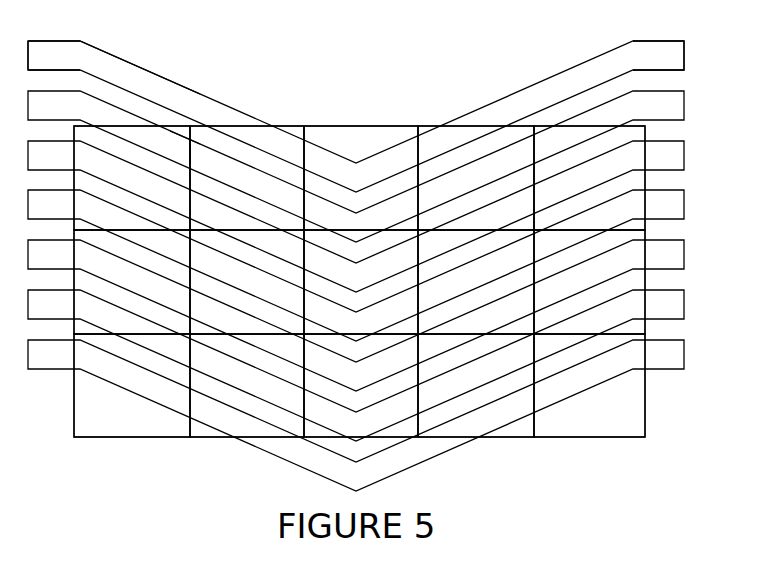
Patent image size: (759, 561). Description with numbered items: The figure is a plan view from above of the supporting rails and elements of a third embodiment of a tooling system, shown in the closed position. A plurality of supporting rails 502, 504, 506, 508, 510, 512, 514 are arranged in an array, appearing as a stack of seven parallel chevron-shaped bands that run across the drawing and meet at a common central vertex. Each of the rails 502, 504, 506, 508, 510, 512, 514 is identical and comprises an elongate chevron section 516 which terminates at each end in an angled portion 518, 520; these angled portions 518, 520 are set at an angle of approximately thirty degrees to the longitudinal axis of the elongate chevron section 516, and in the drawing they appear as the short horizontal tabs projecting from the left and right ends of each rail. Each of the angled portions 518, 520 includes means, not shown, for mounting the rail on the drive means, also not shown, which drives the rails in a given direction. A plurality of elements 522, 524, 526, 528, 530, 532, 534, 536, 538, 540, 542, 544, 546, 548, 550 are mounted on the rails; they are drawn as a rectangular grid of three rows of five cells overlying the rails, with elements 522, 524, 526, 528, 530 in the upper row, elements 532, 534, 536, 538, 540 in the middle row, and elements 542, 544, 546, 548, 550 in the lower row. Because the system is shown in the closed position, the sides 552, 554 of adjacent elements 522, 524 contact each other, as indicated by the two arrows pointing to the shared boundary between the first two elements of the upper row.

The supporting rail 502 is at (587, 70).
The supporting rail 504 is at (661, 104).
The supporting rail 506 is at (661, 154).
The supporting rail 508 is at (661, 204).
The supporting rail 510 is at (661, 254).
The supporting rail 512 is at (661, 304).
The supporting rail 514 is at (661, 354).
The elongate chevron section 516 is at (173, 97).
The angled portion 518 is at (43, 52).
The angled portion 520 is at (663, 57).
The element 522 is at (132, 178).
The element 524 is at (247, 178).
The element 526 is at (361, 178).
The element 528 is at (476, 178).
The element 530 is at (589, 178).
The element 532 is at (162, 290).
The element 534 is at (274, 290).
The element 536 is at (382, 290).
The element 538 is at (504, 290).
The element 540 is at (617, 290).
The element 542 is at (162, 388).
The element 544 is at (274, 388).
The element 546 is at (382, 388).
The element 548 is at (502, 388).
The element 550 is at (614, 388).
The side 552 is at (183, 148).
The side 554 is at (192, 153).